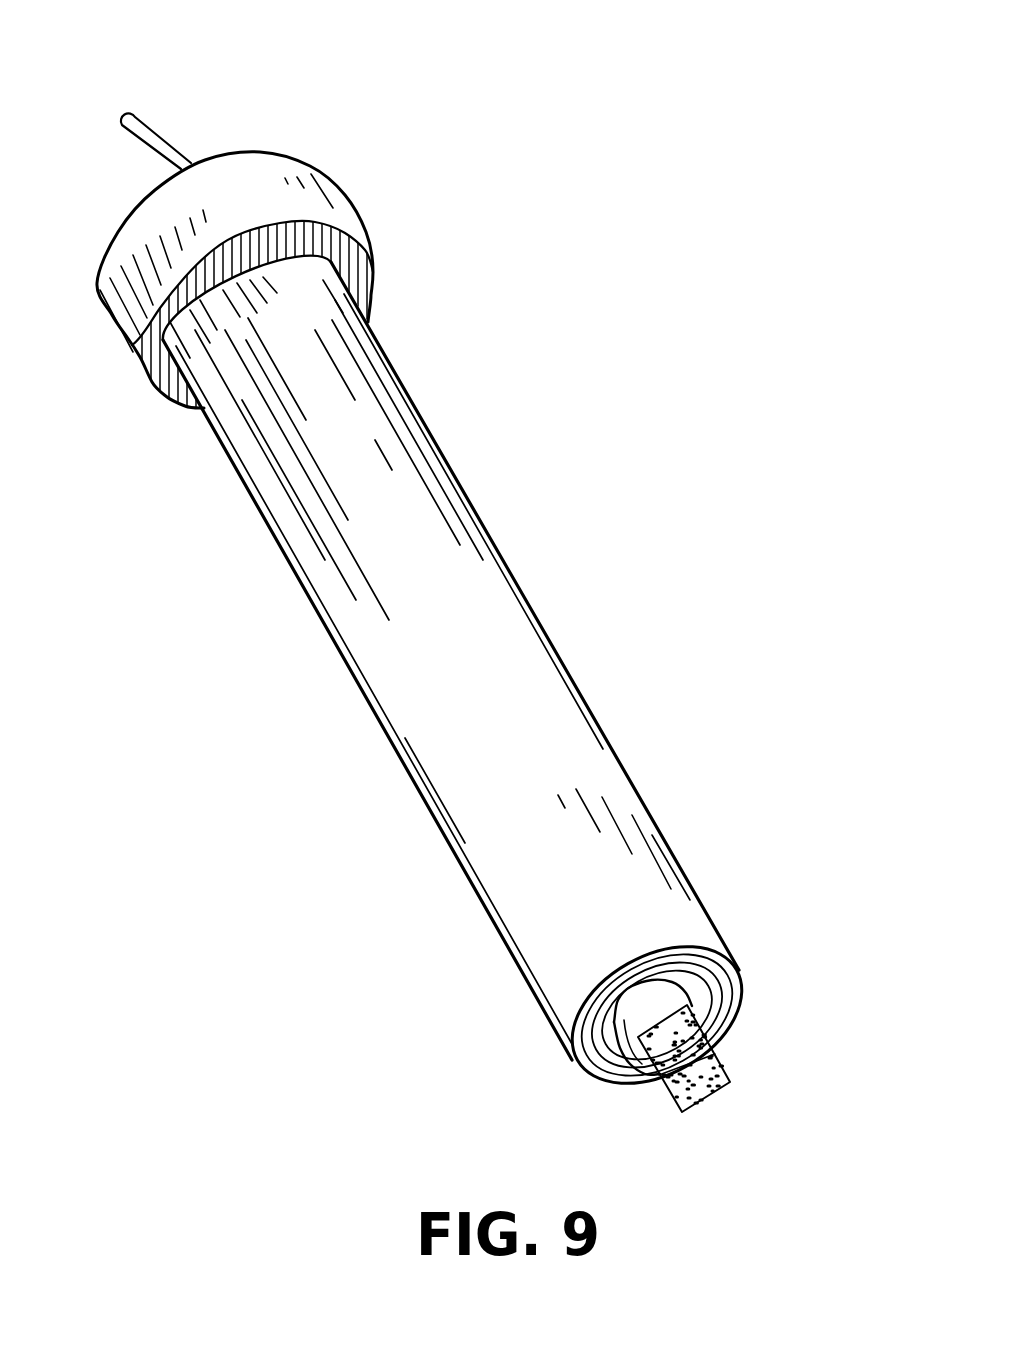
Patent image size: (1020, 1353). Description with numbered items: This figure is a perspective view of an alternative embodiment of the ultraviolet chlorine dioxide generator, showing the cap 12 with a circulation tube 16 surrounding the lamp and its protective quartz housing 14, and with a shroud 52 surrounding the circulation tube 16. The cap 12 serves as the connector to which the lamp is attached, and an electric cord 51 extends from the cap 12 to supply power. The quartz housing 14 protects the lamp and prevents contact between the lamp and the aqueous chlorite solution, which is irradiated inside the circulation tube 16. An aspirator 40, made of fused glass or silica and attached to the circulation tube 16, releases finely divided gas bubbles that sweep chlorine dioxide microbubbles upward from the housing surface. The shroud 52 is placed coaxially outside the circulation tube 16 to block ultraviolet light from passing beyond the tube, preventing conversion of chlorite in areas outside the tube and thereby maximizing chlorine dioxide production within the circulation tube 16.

The cap 12 is at (325, 176).
The quartz housing 14 is at (622, 1013).
The circulation tube 16 is at (712, 968).
The aspirator 40 is at (724, 1068).
The electric cord 51 is at (157, 132).
The shroud 52 is at (586, 705).